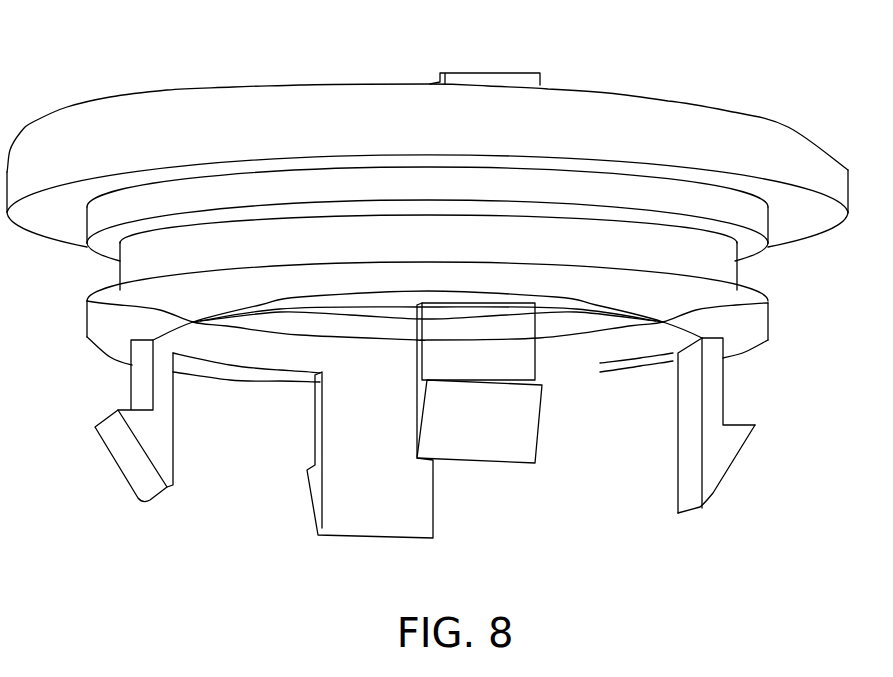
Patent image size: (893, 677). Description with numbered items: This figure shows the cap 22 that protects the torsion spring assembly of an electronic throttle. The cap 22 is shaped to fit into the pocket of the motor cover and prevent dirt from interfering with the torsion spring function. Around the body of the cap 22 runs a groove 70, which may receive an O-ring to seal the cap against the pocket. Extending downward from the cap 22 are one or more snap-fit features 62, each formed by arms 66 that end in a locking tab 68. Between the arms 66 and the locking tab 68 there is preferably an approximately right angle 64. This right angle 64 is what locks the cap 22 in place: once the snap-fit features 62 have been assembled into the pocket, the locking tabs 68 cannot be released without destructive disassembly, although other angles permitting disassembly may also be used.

The cap 22 is at (120, 143).
The groove 70 is at (703, 258).
The snap-fit feature 62 is at (127, 460).
The right angle 64 is at (700, 425).
The arms 66 is at (688, 473).
The locking tab 68 is at (752, 422).